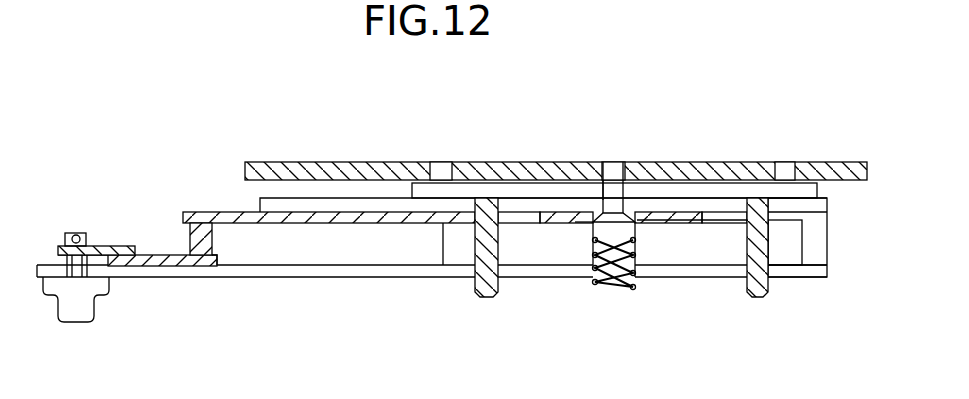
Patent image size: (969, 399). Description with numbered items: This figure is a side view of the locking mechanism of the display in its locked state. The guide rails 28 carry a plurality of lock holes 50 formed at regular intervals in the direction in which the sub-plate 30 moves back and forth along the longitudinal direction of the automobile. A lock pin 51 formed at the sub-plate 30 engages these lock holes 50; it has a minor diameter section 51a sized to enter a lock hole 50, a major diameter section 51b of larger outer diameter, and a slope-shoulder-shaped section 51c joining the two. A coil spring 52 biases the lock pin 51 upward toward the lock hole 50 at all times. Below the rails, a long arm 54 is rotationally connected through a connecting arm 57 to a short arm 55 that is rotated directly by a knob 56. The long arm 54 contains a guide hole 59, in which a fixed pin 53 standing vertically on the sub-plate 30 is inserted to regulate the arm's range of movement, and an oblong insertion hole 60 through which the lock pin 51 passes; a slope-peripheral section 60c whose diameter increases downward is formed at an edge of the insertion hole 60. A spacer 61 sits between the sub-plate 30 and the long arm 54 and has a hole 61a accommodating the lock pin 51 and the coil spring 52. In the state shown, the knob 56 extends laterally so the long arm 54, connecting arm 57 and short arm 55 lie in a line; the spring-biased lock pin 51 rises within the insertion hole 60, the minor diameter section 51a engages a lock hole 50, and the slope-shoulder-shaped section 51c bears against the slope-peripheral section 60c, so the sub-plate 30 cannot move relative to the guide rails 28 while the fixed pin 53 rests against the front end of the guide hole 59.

The guide rails 28 is at (287, 162).
The sub-plate 30 is at (343, 277).
The lock holes 50 is at (438, 162).
The lock pin 51 is at (622, 195).
The minor diameter section 51a is at (603, 190).
The major diameter section 51b is at (632, 232).
The slope-shoulder-shaped section 51c is at (630, 213).
The coil spring 52 is at (617, 290).
The fixed pin 53 is at (483, 297).
The long arm 54 is at (217, 212).
The short arm 55 is at (105, 246).
The knob 56 is at (78, 322).
The connecting arm 57 is at (158, 255).
The guide hole 59 is at (526, 223).
The insertion hole 60 is at (672, 220).
The slope-peripheral section 60c is at (590, 221).
The spacer 61 is at (787, 265).
The hole 61a is at (594, 237).